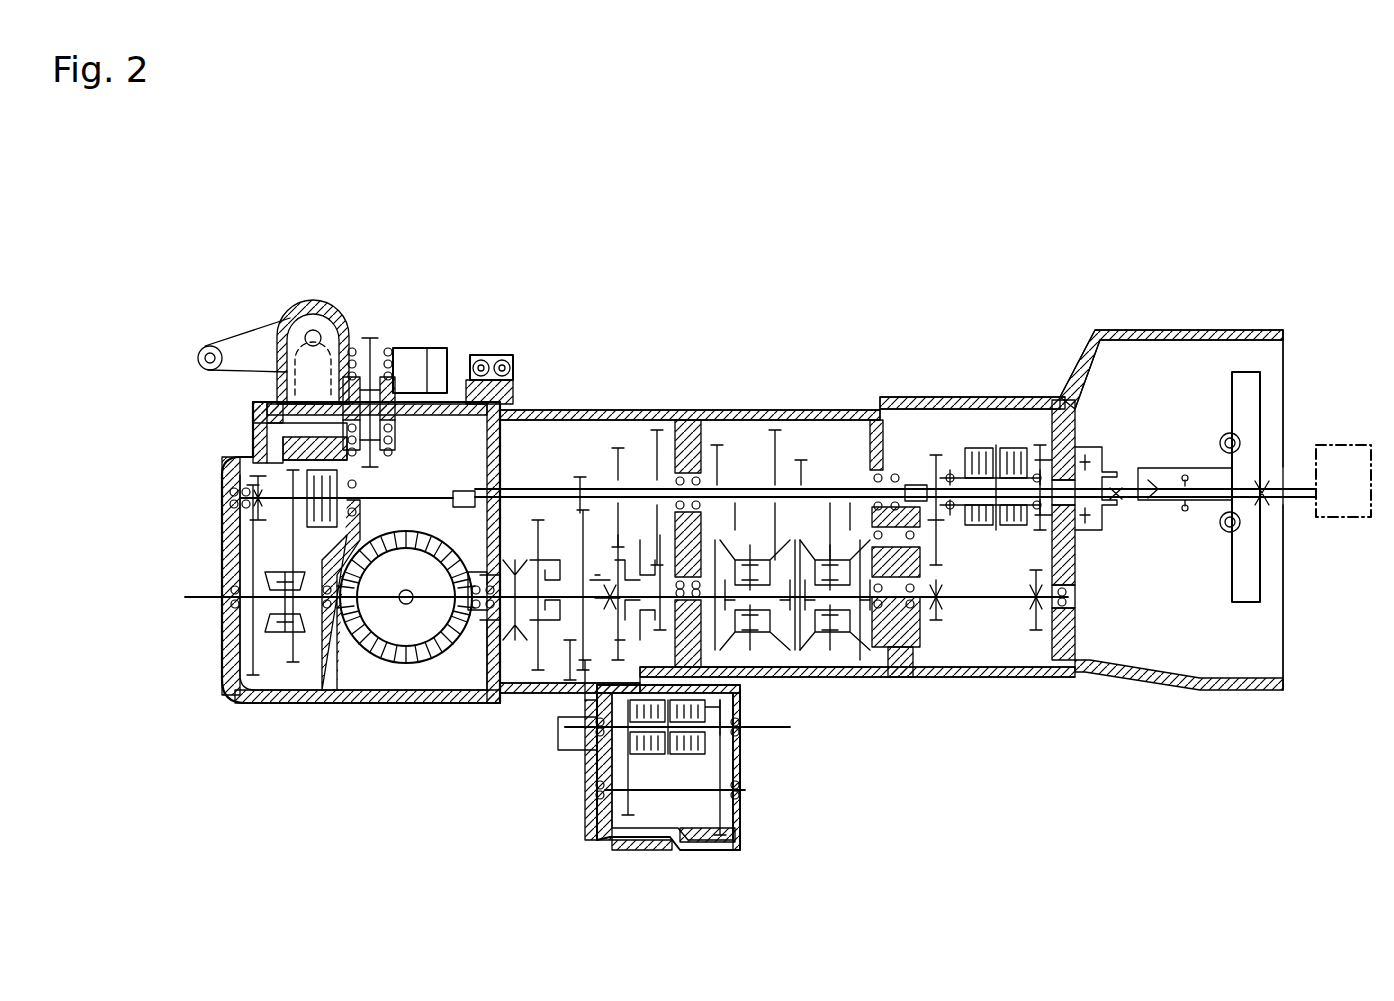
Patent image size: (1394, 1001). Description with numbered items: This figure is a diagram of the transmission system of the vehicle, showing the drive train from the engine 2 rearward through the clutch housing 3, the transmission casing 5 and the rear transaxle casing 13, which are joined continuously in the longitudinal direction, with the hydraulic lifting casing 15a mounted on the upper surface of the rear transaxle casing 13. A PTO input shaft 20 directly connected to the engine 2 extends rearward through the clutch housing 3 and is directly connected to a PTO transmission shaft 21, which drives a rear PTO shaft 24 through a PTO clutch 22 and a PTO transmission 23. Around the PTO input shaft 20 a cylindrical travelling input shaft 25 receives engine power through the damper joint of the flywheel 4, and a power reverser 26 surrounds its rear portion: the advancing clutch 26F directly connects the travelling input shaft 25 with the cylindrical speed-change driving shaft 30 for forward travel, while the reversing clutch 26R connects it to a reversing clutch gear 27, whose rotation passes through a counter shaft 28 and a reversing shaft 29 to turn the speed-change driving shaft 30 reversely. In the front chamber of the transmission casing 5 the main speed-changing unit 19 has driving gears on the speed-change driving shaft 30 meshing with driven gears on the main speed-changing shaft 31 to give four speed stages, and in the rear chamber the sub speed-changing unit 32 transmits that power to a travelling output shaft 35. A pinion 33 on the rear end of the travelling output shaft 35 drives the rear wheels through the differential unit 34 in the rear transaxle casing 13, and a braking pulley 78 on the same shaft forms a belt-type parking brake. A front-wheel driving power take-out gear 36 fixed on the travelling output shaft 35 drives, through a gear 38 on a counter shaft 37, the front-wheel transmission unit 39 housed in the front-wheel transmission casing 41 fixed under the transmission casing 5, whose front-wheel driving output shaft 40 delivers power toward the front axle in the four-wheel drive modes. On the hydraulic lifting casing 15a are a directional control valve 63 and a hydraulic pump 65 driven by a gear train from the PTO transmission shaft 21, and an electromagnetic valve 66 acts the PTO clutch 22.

The engine 2 is at (1333, 444).
The clutch housing 3 is at (1066, 680).
The flywheel 4 is at (1262, 590).
The transmission casing 5 is at (712, 410).
The rear transaxle casing 13 is at (420, 704).
The hydraulic lifting casing 15a is at (312, 298).
The main speed-changing unit 19 is at (846, 652).
The PTO input shaft 20 is at (1213, 490).
The PTO transmission shaft 21 is at (404, 500).
The PTO clutch 22 is at (290, 470).
The PTO transmission 23 is at (283, 668).
The rear PTO shaft 24 is at (200, 598).
The travelling input shaft 25 is at (1126, 470).
The power reverser 26 is at (990, 440).
The advancing clutch 26F is at (965, 415).
The reversing clutch 26R is at (1013, 415).
The reversing clutch gear 27 is at (1037, 415).
The counter shaft 28 is at (965, 602).
The reversing shaft 29 is at (943, 545).
The speed-change driving shaft 30 is at (823, 410).
The main speed-changing shaft 31 is at (795, 680).
The sub speed-changing unit 32 is at (520, 650).
The pinion 33 is at (470, 572).
The differential unit 34 is at (385, 663).
The travelling output shaft 35 is at (510, 600).
The front-wheel driving power take-out gear 36 is at (605, 570).
The counter shaft 37 is at (583, 698).
The gear 38 is at (590, 762).
The front-wheel transmission unit 39 is at (672, 770).
The front-wheel driving output shaft 40 is at (790, 728).
The front-wheel transmission casing 41 is at (610, 840).
The directional control valve 63 is at (510, 355).
The hydraulic pump 65 is at (423, 348).
The electromagnetic valve 66 is at (483, 355).
The braking pulley 78 is at (482, 632).